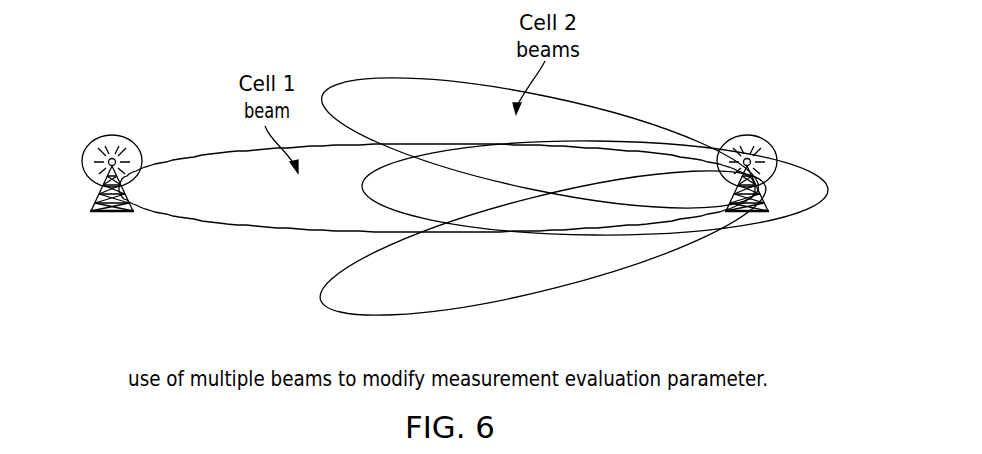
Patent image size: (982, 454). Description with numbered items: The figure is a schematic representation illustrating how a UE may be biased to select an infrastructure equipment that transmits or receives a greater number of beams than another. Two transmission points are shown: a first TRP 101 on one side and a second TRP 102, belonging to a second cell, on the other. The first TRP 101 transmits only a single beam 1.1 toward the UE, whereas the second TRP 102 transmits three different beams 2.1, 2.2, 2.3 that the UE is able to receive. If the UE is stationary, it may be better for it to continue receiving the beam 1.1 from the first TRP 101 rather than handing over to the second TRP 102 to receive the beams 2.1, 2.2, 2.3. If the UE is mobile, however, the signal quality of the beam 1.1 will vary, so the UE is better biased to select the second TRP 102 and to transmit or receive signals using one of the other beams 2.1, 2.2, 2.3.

The first TRP 101 is at (112, 213).
The second TRP 102 is at (750, 213).
The beam 1.1 is at (248, 210).
The beam 2.1 is at (410, 92).
The beam 2.2 is at (389, 194).
The beam 2.3 is at (530, 270).